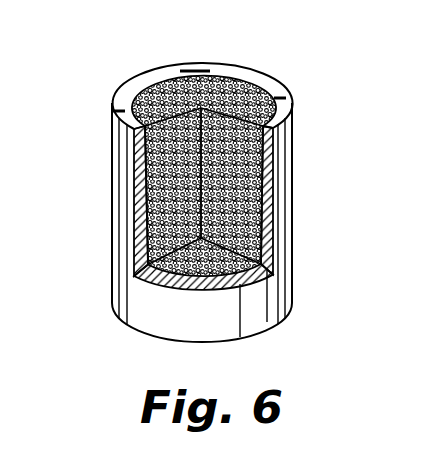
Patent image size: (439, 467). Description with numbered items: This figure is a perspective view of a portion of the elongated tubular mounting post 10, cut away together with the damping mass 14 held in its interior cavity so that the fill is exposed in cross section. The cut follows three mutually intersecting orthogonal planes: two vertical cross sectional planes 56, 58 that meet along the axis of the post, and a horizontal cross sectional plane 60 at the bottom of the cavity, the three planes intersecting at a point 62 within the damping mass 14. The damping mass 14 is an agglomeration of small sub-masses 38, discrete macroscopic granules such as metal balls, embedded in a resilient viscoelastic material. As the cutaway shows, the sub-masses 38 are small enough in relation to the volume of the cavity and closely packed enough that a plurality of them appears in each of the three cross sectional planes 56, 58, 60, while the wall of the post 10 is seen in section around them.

The mounting post 10 is at (316, 102).
The damping mass 14 is at (236, 88).
The sub-masses 38 is at (166, 80).
The cross sectional plane 56 is at (157, 185).
The cross sectional plane 58 is at (247, 185).
The cross sectional plane 60 is at (147, 252).
The point 62 is at (201, 238).